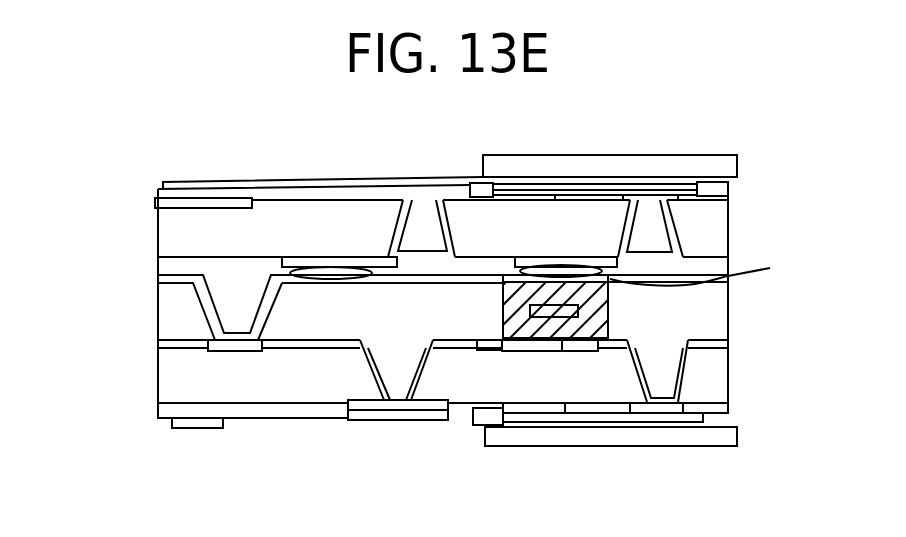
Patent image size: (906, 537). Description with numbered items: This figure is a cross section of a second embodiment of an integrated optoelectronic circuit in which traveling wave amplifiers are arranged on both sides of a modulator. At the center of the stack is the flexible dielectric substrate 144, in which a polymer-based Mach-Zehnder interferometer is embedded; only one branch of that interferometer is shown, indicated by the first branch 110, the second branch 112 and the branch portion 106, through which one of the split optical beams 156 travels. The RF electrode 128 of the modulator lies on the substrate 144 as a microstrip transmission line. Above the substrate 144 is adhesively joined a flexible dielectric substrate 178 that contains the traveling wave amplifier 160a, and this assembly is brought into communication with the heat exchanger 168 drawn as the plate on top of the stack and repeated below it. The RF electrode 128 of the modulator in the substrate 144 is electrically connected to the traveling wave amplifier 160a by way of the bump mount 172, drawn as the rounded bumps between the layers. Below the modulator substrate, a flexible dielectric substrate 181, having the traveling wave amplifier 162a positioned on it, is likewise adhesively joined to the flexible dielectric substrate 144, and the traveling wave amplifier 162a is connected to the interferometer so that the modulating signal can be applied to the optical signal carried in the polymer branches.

The MZI branch 106 is at (528, 322).
The first branch 110 is at (688, 321).
The second branch 112 is at (578, 305).
The RF electrode 128 is at (707, 270).
The flexible dielectric substrate 144 is at (717, 305).
The beam 156 is at (175, 268).
The traveling wave amplifier 160a is at (733, 188).
The traveling wave amplifier 162a is at (617, 422).
The heat exchanger 168 is at (563, 158).
The bump mount 172 is at (287, 272).
The flexible dielectric substrate 178 is at (720, 238).
The flexible dielectric substrate 181 is at (720, 372).